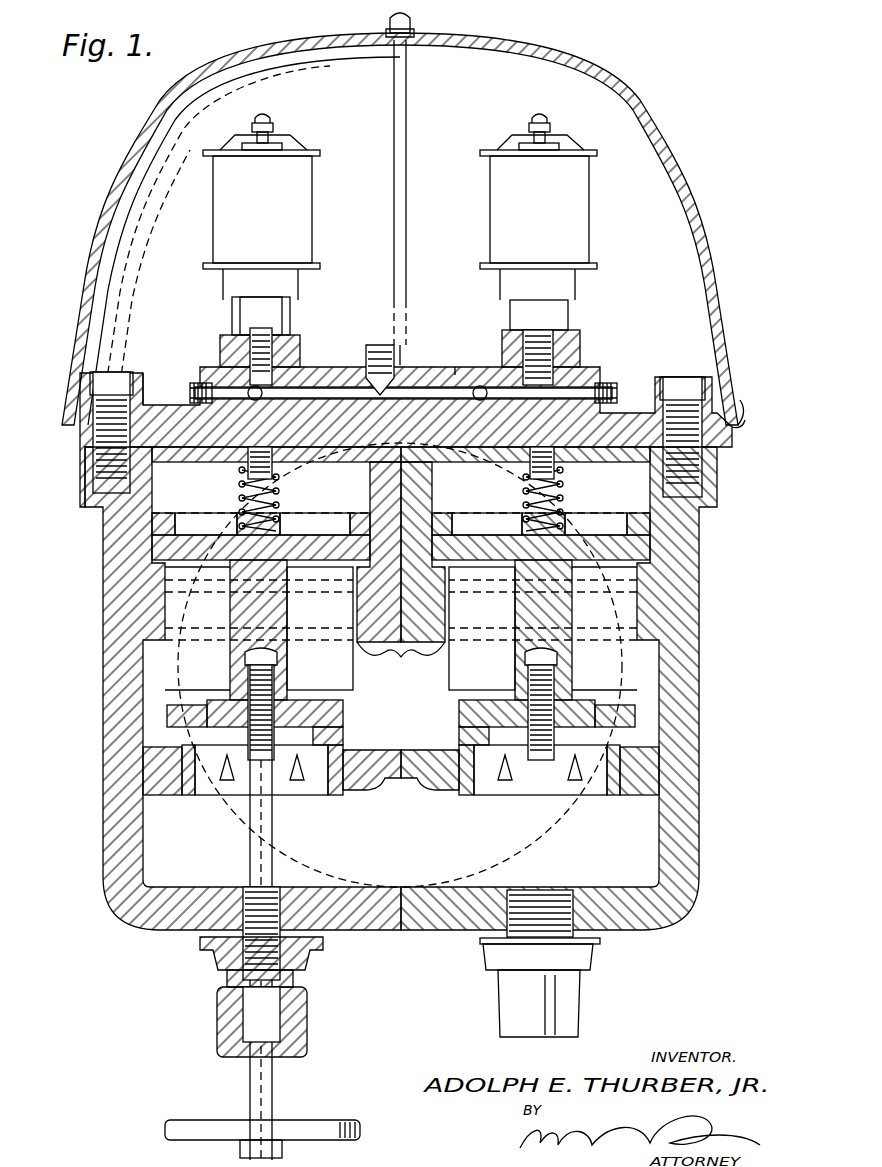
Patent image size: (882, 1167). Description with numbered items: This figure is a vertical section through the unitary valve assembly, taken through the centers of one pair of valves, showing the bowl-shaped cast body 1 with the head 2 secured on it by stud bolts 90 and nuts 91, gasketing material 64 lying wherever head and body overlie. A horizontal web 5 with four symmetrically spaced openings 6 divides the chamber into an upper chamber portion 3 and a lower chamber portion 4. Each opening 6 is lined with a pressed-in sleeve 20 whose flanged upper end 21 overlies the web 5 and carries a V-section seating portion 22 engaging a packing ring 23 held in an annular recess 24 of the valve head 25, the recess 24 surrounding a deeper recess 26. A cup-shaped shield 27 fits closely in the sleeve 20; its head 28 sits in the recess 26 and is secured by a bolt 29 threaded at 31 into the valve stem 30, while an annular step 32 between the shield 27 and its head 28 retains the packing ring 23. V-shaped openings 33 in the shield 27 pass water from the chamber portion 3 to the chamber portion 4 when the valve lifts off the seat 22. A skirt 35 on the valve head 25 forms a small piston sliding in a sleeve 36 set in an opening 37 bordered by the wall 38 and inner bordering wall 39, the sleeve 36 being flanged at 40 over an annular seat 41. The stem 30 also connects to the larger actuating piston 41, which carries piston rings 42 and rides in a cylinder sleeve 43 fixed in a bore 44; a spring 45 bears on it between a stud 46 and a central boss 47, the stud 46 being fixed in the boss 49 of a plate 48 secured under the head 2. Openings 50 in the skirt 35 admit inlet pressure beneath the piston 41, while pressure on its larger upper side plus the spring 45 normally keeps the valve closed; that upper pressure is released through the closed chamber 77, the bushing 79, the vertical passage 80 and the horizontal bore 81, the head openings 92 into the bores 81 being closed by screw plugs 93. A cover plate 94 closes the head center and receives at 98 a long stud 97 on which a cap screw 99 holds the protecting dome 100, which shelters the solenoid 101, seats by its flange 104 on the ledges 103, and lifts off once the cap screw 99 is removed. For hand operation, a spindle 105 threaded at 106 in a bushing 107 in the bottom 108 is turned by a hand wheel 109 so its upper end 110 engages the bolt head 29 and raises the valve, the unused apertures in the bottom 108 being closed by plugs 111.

The body 1 is at (90, 618).
The head 2 is at (175, 389).
The upper chamber portion 3 is at (150, 690).
The lower chamber portion 4 is at (130, 910).
The horizontal web 5 is at (430, 782).
The openings 6 is at (170, 795).
The sleeve 20 is at (335, 797).
The flanged upper end 21 is at (340, 745).
The seating portion 22 is at (340, 727).
The packing ring 23 is at (340, 712).
The annular recess 24 is at (167, 715).
The valve head 25 is at (320, 700).
The deeper recess 26 is at (300, 650).
The shield 27 is at (220, 795).
The shield head 28 is at (240, 700).
The bolt 29 is at (262, 782).
The valve stem 30 is at (230, 625).
The threaded connection 31 is at (295, 640).
The annular step 32 is at (182, 760).
The openings 33 is at (235, 795).
The skirt 35 is at (375, 660).
The sleeve 36 is at (180, 600).
The opening 37 is at (150, 605).
The wall 38 is at (103, 640).
The inner bordering wall 39 is at (410, 650).
The flange 40 is at (100, 555).
The actuating piston 41 is at (300, 513).
The piston rings 42 is at (175, 515).
The cylinder sleeve 43 is at (155, 470).
The bore 44 is at (100, 520).
The spring 45 is at (280, 480).
The stud 46 is at (250, 488).
The boss 47 is at (245, 525).
The plate 48 is at (340, 465).
The boss 49 is at (248, 455).
The openings 50 is at (175, 665).
The packing material 64 is at (705, 450).
The closed chamber 77 is at (570, 300).
The bushing 79 is at (545, 330).
The vertical passage 80 is at (473, 396).
The horizontal bore 81 is at (455, 375).
The stud bolts 90 is at (125, 372).
The nuts 91 is at (140, 375).
The openings 92 is at (366, 355).
The screw plugs 93 is at (313, 318).
The cover plate 94 is at (430, 315).
The long stud 97 is at (408, 160).
The threaded connection 98 is at (410, 290).
The cap screw 99 is at (386, 28).
The protecting dome 100 is at (497, 50).
The solenoid 101 is at (300, 195).
The ledges 103 is at (745, 412).
The flange 104 is at (740, 400).
The spindle 105 is at (250, 870).
The threaded connection 106 is at (275, 890).
The bushing 107 is at (283, 900).
The bottom 108 is at (315, 930).
The hand wheel 109 is at (170, 1120).
The upper end 110 is at (252, 800).
The plugs 111 is at (582, 1003).